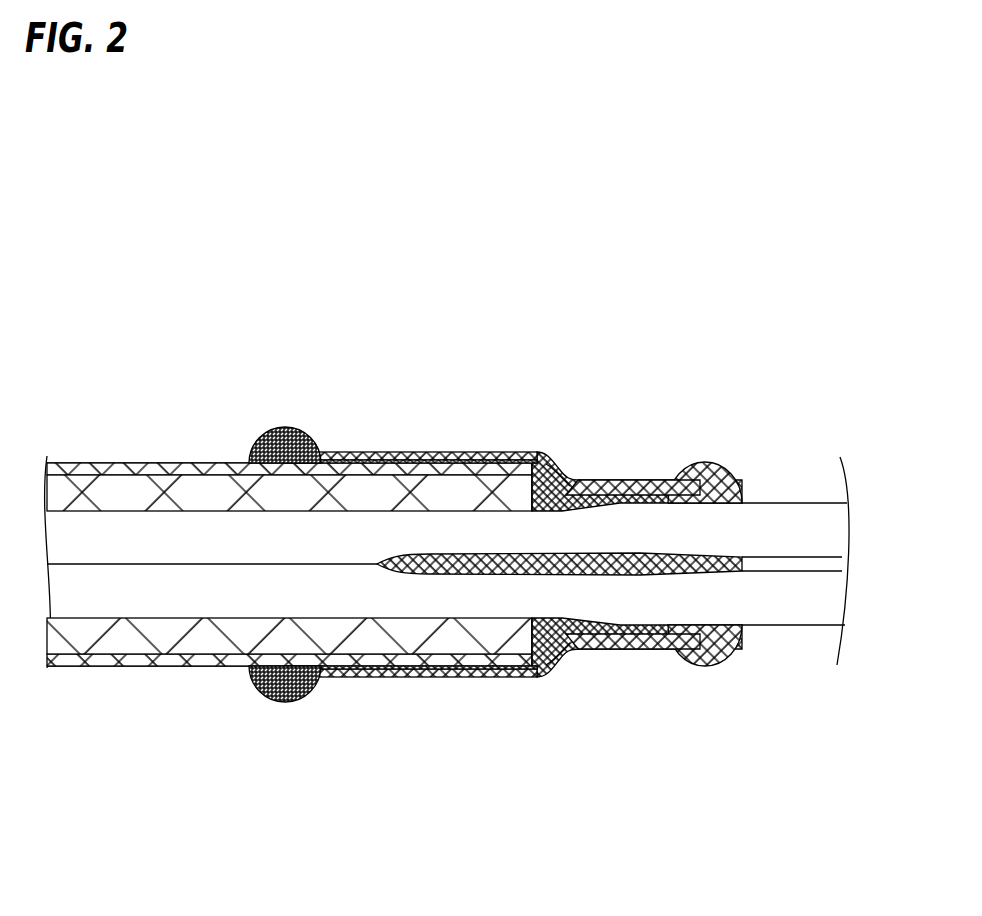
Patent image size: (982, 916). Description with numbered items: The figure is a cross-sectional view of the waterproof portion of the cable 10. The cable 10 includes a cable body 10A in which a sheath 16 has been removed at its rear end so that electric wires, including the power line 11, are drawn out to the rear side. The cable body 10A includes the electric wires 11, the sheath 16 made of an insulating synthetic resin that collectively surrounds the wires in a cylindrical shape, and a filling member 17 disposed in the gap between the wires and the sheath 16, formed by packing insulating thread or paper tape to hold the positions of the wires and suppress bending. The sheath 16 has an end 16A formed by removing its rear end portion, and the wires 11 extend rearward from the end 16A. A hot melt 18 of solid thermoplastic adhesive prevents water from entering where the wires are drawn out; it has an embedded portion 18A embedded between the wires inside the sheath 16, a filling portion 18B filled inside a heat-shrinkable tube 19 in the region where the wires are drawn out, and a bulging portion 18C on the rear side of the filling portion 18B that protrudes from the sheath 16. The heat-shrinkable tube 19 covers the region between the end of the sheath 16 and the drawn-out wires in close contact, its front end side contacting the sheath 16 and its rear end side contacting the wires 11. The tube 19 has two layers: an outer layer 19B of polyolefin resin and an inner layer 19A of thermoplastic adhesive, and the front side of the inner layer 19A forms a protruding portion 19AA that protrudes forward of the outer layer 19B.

The cable 10 is at (447, 505).
The cable body 10A is at (168, 462).
The power line 11 is at (797, 530).
The sheath 16 is at (95, 467).
The end 16A is at (551, 462).
The filling member 17 is at (152, 637).
The hot melt 18 is at (637, 562).
The embedded portion 18A is at (470, 565).
The filling portion 18B is at (618, 566).
The bulging portion 18C is at (712, 470).
The heat-shrinkable tube 19 is at (411, 507).
The inner layer 19A is at (473, 385).
The outer layer 19B is at (440, 452).
The protruding portion 19AA is at (288, 430).